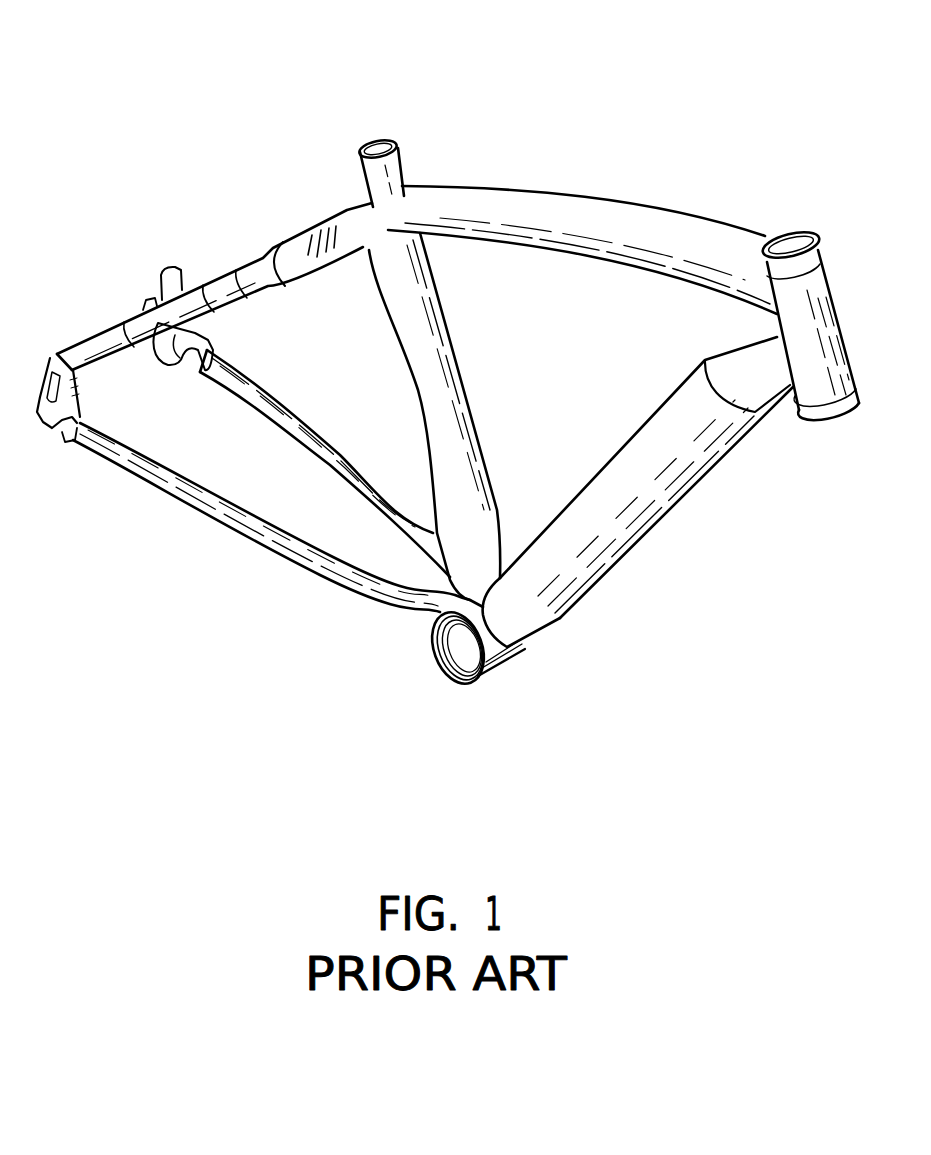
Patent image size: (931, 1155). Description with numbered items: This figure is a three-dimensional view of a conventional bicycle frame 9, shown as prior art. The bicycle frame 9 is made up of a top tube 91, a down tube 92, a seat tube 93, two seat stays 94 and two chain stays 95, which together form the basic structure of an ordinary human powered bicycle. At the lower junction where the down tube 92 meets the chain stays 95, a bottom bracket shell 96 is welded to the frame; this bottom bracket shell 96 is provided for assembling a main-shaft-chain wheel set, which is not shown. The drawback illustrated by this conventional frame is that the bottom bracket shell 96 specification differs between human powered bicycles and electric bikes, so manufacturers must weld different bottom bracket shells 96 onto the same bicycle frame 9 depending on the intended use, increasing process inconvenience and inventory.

The bicycle frame 9 is at (553, 147).
The top tube 91 is at (628, 214).
The down tube 92 is at (645, 511).
The seat tube 93 is at (447, 386).
The seat stays 94 is at (243, 282).
The chain stays 95 is at (323, 463).
The bottom bracket shell 96 is at (493, 650).